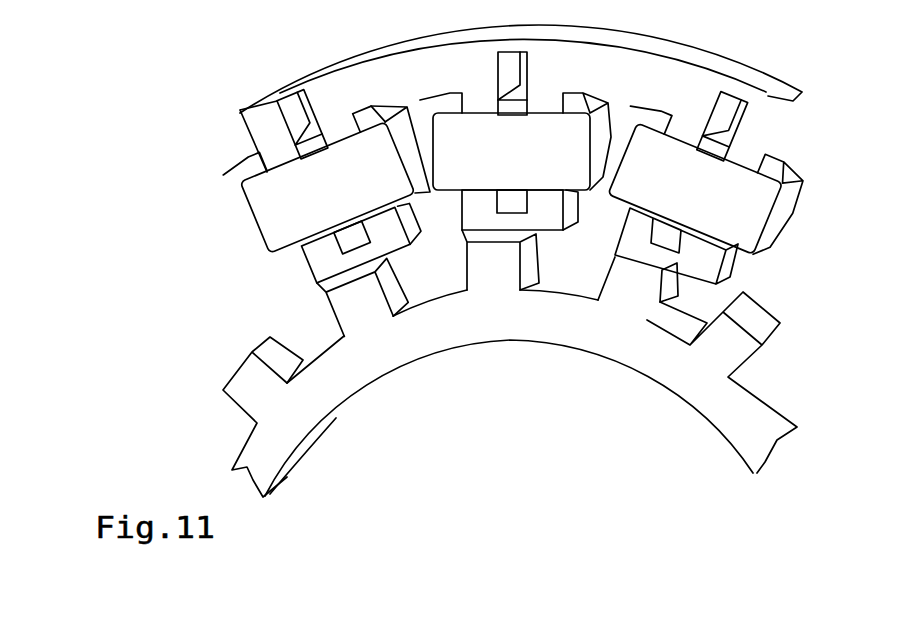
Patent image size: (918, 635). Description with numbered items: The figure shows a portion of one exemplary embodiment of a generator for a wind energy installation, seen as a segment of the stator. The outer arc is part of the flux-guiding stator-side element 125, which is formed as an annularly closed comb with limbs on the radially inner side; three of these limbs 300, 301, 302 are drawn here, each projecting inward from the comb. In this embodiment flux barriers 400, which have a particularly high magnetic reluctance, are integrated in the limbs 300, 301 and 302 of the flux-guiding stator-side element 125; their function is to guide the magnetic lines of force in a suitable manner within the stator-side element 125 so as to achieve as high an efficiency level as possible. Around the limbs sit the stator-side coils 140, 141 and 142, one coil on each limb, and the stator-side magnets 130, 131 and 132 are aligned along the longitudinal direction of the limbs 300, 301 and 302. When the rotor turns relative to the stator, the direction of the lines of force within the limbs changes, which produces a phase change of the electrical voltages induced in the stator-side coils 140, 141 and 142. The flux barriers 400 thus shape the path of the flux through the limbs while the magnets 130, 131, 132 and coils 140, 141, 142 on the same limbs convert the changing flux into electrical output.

The flux-guiding stator-side element 125 is at (680, 80).
The flux barriers 400 is at (293, 115).
The stator-side coil 140 is at (297, 203).
The stator-side coil 141 is at (563, 141).
The stator-side coil 142 is at (730, 212).
The limb 300 is at (323, 258).
The limb 301 is at (547, 213).
The limb 302 is at (698, 260).
The stator-side magnet 130 is at (352, 235).
The stator-side magnet 131 is at (512, 203).
The stator-side magnet 132 is at (671, 240).